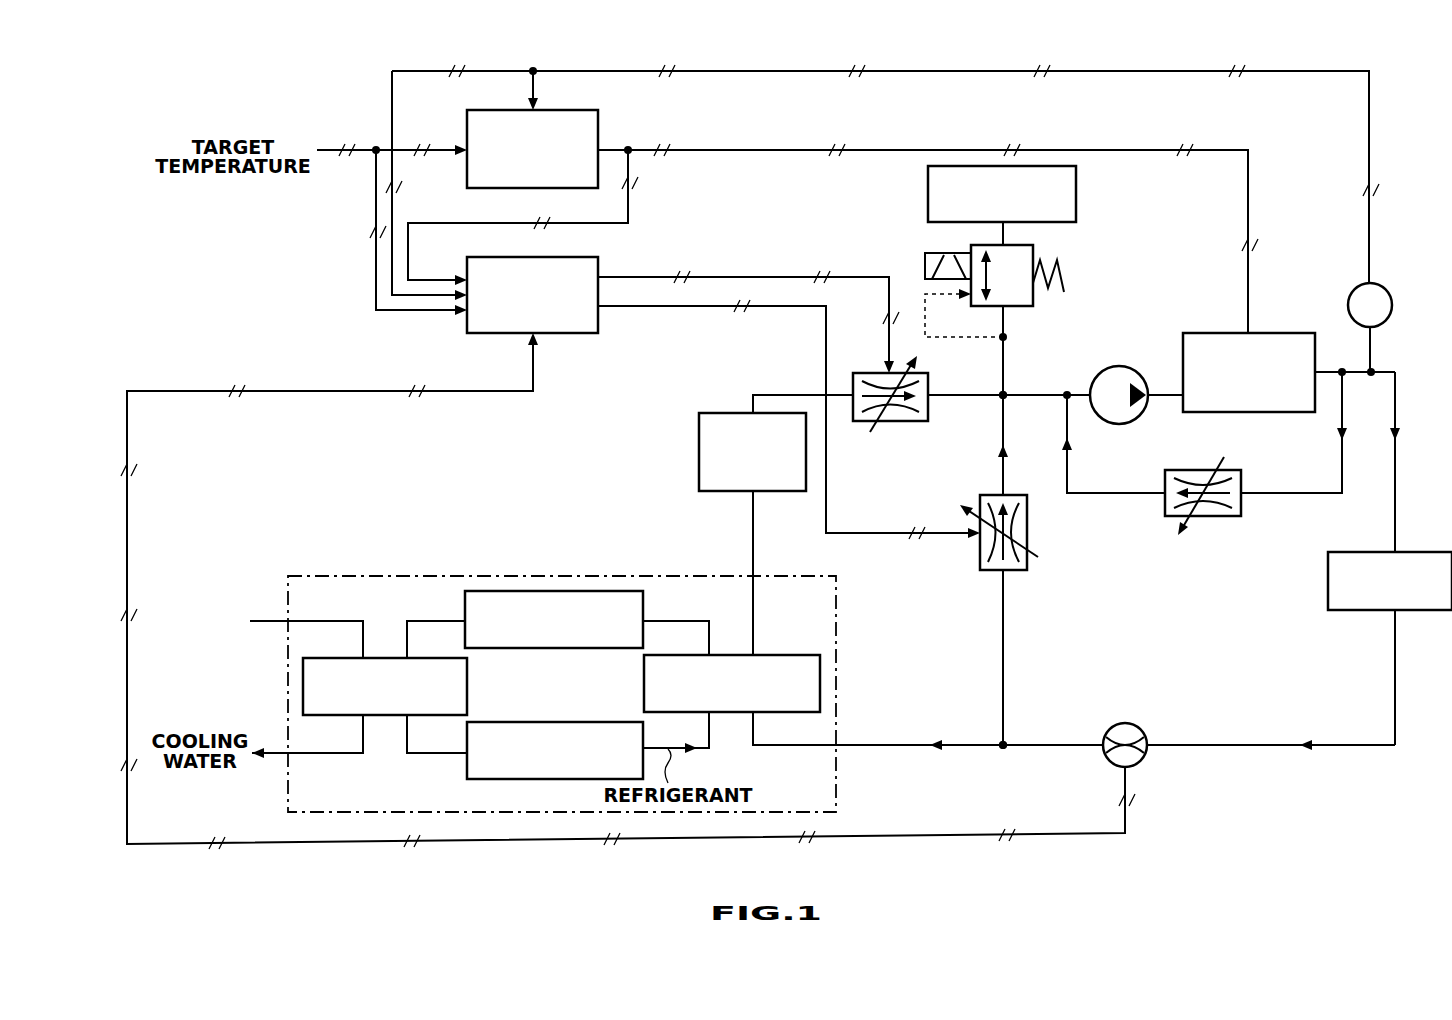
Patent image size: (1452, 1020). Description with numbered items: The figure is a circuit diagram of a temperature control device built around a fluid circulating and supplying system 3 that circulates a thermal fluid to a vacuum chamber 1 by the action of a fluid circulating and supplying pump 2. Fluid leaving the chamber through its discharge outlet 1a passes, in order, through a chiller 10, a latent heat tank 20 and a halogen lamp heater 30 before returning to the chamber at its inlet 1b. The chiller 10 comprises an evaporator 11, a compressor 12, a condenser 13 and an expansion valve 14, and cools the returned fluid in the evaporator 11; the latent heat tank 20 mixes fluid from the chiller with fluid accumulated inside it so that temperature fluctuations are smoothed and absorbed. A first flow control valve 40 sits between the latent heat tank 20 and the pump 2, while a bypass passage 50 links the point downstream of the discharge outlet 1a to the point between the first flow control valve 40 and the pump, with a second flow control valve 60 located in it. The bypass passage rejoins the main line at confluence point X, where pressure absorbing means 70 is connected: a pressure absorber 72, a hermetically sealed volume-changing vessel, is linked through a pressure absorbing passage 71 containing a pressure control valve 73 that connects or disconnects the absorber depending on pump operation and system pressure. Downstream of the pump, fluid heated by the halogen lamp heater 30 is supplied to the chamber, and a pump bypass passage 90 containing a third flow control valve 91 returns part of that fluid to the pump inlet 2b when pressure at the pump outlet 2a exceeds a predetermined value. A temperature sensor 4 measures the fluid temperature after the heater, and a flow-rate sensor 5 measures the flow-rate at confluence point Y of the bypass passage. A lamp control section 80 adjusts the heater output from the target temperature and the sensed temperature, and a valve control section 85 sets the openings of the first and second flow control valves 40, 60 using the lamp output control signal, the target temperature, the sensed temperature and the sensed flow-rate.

The vacuum chamber 1 is at (1362, 552).
The discharge outlet 1a is at (1395, 615).
The inlet of vacuum chamber 1b is at (1395, 545).
The fluid circulating and supplying pump 2 is at (1118, 366).
The outlet 2a is at (1140, 416).
The inlet 2b is at (1092, 412).
The fluid circulating and supplying system 3 is at (1198, 757).
The temperature sensor 4 is at (1385, 290).
The flow-rate sensor 5 is at (1125, 723).
The chiller 10 is at (406, 576).
The evaporator 11 is at (790, 655).
The compressor 12 is at (522, 649).
The condenser 13 is at (385, 654).
The expansion valve 14 is at (585, 722).
The latent heat tank 20 is at (698, 457).
The halogen lamp heater 30 is at (1268, 413).
The first flow control valve 40 is at (905, 422).
The bypass passage 50 is at (1005, 618).
The second flow control valve 60 is at (1030, 530).
The pressure absorbing means 70 is at (1093, 227).
The pressure absorbing passage 71 is at (1005, 360).
The pressure absorber 72 is at (1077, 190).
The pressure control valve 73 is at (1035, 297).
The lamp control section 80 is at (600, 122).
The valve control section 85 is at (600, 260).
The pump bypass passage 90 is at (1343, 465).
The third flow control valve 91 is at (1235, 516).
The confluence point X is at (1007, 398).
The confluence point Y is at (1005, 742).